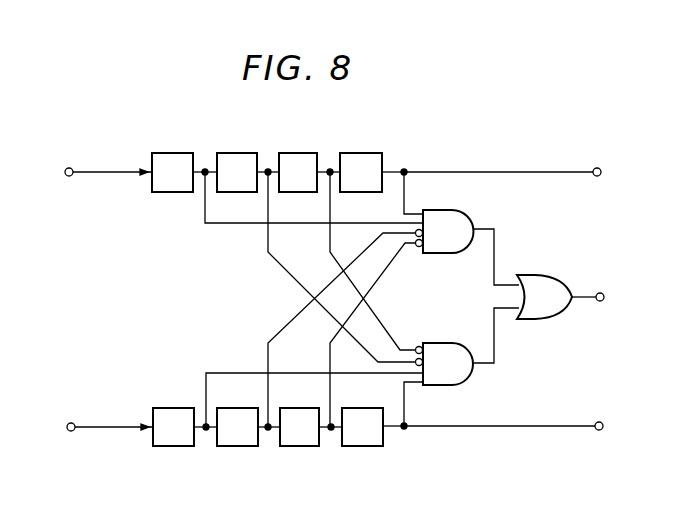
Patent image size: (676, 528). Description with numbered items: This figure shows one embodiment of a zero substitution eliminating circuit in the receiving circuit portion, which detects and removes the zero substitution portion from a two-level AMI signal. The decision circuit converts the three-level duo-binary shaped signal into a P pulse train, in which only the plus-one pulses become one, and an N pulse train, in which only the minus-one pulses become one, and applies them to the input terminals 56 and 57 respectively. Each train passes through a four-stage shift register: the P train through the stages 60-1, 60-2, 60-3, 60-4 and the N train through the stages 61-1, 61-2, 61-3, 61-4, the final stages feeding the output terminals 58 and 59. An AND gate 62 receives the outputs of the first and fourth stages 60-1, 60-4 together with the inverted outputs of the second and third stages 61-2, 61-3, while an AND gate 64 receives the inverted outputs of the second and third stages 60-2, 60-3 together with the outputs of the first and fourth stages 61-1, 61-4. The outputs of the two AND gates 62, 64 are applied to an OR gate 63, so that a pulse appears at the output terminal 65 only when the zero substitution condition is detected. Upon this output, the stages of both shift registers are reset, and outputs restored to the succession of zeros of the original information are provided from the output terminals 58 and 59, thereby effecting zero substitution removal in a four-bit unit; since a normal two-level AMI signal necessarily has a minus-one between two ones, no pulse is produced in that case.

The input terminal 56 is at (69, 166).
The input terminal 57 is at (70, 422).
The output terminal 58 is at (597, 167).
The output terminal 59 is at (599, 421).
The first stage of shift register 60-1 is at (171, 151).
The second stage of shift register 60-2 is at (238, 151).
The third stage of shift register 60-3 is at (299, 151).
The fourth stage of shift register 60-4 is at (360, 151).
The first stage of shift register 61-1 is at (173, 448).
The second stage of shift register 61-2 is at (240, 448).
The third stage of shift register 61-3 is at (301, 448).
The fourth stage of shift register 61-4 is at (363, 448).
The AND gate 62 is at (445, 208).
The OR gate 63 is at (536, 272).
The AND gate 64 is at (442, 341).
The output terminal 65 is at (600, 292).